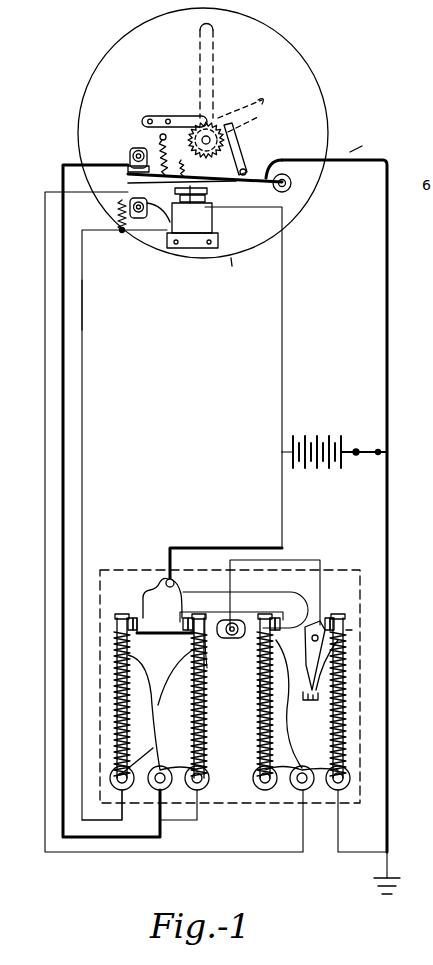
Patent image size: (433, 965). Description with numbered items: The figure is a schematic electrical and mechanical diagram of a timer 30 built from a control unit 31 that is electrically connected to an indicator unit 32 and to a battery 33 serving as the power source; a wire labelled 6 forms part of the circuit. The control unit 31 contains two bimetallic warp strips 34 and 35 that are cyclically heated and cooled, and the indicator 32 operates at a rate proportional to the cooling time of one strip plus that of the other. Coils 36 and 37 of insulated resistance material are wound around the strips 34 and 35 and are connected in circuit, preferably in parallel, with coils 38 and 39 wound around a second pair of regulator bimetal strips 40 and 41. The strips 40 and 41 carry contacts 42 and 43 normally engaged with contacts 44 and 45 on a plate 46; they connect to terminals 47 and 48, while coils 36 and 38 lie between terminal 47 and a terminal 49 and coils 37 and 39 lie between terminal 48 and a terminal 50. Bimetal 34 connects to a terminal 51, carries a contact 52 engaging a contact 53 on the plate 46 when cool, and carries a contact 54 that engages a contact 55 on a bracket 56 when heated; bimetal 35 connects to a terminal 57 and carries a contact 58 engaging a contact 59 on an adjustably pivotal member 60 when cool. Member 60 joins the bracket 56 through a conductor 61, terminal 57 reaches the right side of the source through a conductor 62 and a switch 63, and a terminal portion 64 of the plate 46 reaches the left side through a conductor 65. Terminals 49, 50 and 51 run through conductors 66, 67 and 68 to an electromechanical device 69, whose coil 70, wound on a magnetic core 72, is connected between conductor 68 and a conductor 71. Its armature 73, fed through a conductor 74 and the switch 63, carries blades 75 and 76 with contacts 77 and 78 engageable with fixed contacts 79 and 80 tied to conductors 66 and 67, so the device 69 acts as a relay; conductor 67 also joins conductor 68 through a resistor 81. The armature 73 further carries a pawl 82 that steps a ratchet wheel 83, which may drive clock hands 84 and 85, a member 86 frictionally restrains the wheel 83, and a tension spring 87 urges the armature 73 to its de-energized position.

The circuit wire 6 is at (84, 312).
The timer 30 is at (350, 152).
The control unit 31 is at (348, 567).
The indicator unit 32 is at (334, 102).
The battery 33 is at (325, 440).
The bimetallic warp strip 34 is at (183, 639).
The bimetallic warp strip 35 is at (347, 636).
The coil 36 is at (193, 692).
The coil 37 is at (333, 734).
The coil 38 is at (129, 680).
The coil 39 is at (259, 711).
The regulator bimetal strip 40 is at (117, 640).
The regulator bimetal strip 41 is at (259, 690).
The contact 42 is at (128, 618).
The contact 43 is at (270, 625).
The contact 44 is at (131, 616).
The contact 45 is at (272, 617).
The plate 46 is at (160, 590).
The terminal 47 is at (118, 796).
The terminal 48 is at (258, 790).
The terminal 49 is at (154, 790).
The terminal 50 is at (297, 790).
The terminal 51 is at (192, 790).
The contact 52 is at (190, 609).
The contact 53 is at (184, 628).
The contact 54 is at (199, 612).
The contact 55 is at (218, 646).
The bracket 56 is at (236, 637).
The terminal 57 is at (352, 790).
The contact 58 is at (334, 618).
The contact 59 is at (327, 616).
The adjustably pivotal member 60 is at (306, 652).
The conductor 61 is at (291, 562).
The conductor 62 is at (386, 515).
The switch 63 is at (358, 450).
The terminal portion 64 is at (170, 580).
The conductor 65 is at (284, 508).
The conductor 66 is at (63, 165).
The conductor 67 is at (45, 200).
The conductor 68 is at (200, 820).
The electromechanical device 69 is at (234, 263).
The coil 70 is at (214, 220).
The conductor 71 is at (283, 324).
The core 72 is at (209, 192).
The armature 73 is at (277, 191).
The conductor 74 is at (386, 283).
The blade 75 is at (175, 163).
The blade 76 is at (188, 203).
The contact 77 is at (128, 174).
The contact 78 is at (128, 184).
The fixed contact 79 is at (129, 157).
The fixed contact 80 is at (143, 221).
The resistor 81 is at (118, 212).
The pawl 82 is at (246, 156).
The ratchet wheel 83 is at (206, 148).
The clock hand 84 is at (216, 46).
The clock hand 85 is at (263, 110).
The member 86 is at (181, 117).
The tension spring 87 is at (160, 142).